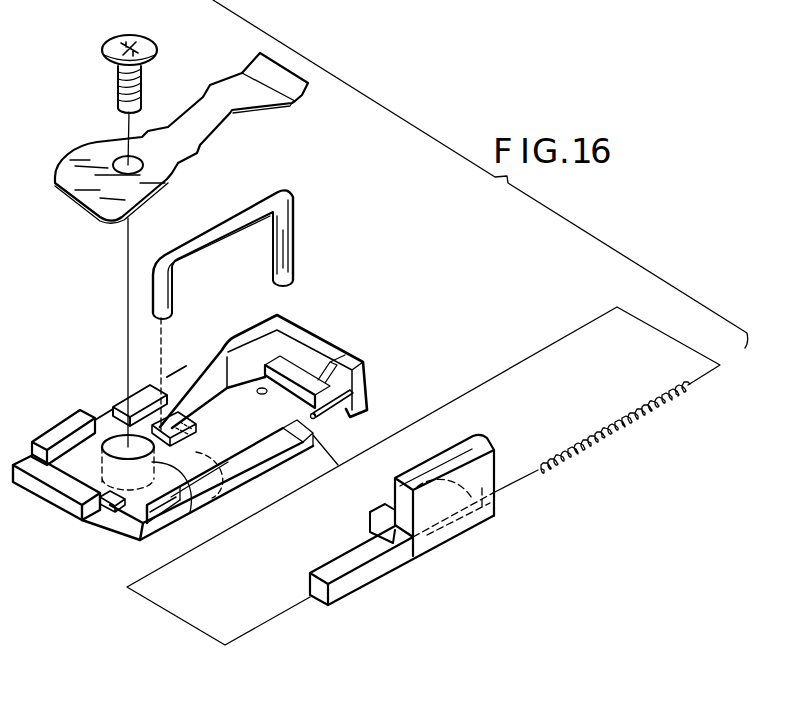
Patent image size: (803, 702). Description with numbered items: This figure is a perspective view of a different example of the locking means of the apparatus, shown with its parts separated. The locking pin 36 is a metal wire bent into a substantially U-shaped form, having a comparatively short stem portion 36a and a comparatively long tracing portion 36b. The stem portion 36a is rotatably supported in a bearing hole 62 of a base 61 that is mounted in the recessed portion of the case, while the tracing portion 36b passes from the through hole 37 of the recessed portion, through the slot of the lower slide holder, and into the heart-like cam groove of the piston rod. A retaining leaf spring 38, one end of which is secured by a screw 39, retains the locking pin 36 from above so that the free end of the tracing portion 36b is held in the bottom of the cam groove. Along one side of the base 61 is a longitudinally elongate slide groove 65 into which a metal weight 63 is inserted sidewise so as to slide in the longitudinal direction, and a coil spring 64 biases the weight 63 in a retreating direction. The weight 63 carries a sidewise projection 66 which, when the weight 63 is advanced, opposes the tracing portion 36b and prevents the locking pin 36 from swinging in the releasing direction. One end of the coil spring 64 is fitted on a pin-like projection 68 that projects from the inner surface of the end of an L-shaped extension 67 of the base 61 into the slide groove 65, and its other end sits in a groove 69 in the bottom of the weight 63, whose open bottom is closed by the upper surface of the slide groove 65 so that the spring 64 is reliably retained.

The locking pin 36 is at (222, 222).
The stem portion 36a is at (172, 292).
The tracing portion 36b is at (294, 257).
The through hole 37 is at (262, 388).
The retaining leaf spring 38 is at (247, 93).
The screw 39 is at (103, 42).
The base 61 is at (65, 415).
The bearing hole 62 is at (232, 502).
The weight 63 is at (397, 570).
The coil spring 64 is at (598, 442).
The slide groove 65 is at (158, 512).
The sidewise projection 66 is at (390, 517).
The frame 67 is at (325, 343).
The pin-like projection 68 is at (313, 417).
The groove 69 is at (460, 523).